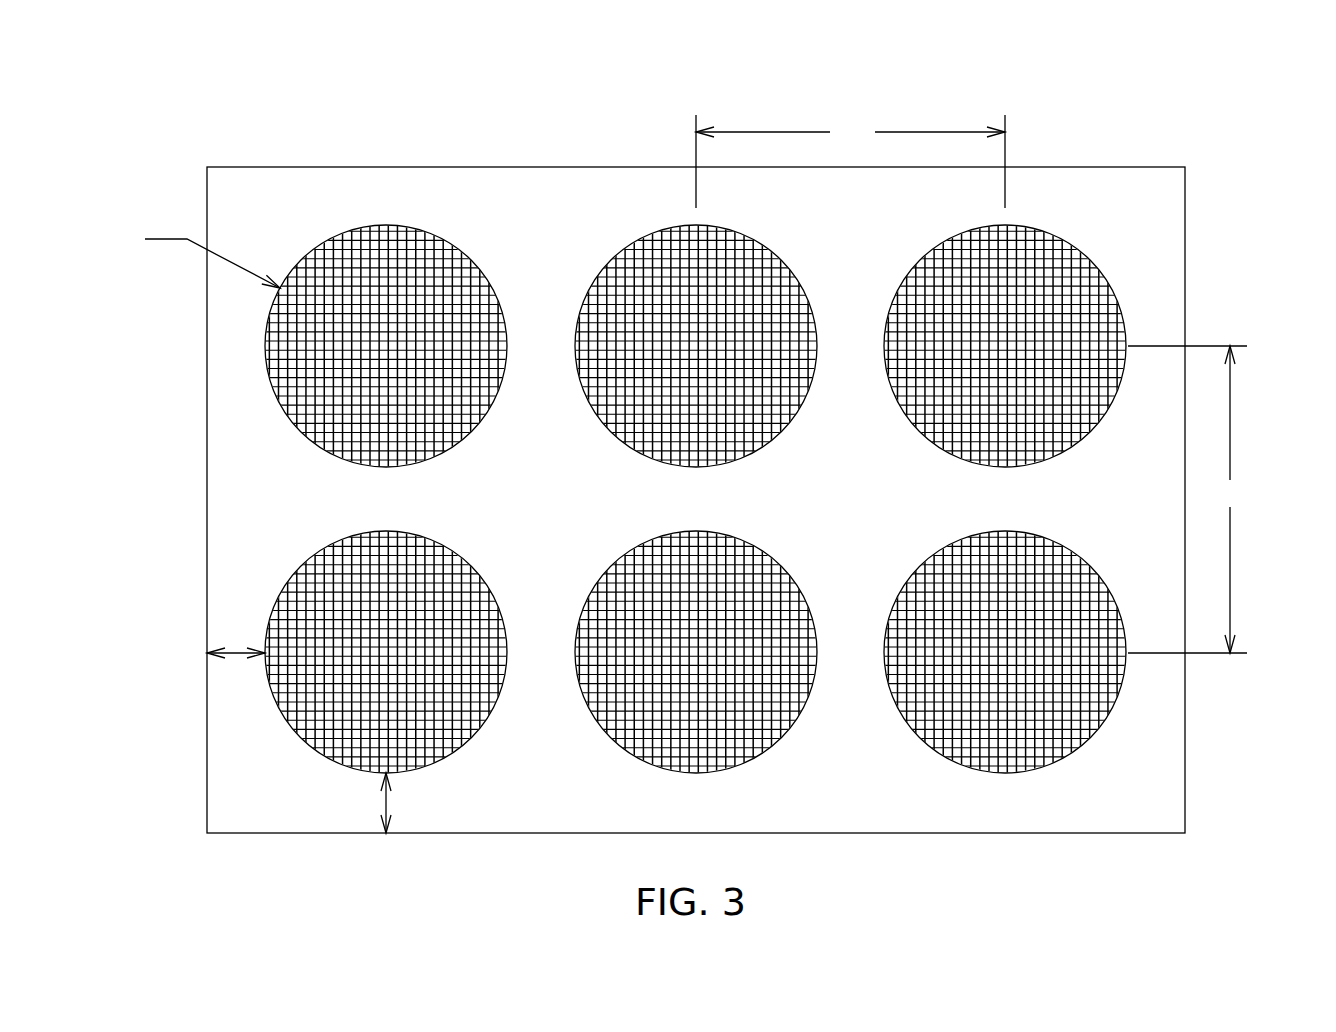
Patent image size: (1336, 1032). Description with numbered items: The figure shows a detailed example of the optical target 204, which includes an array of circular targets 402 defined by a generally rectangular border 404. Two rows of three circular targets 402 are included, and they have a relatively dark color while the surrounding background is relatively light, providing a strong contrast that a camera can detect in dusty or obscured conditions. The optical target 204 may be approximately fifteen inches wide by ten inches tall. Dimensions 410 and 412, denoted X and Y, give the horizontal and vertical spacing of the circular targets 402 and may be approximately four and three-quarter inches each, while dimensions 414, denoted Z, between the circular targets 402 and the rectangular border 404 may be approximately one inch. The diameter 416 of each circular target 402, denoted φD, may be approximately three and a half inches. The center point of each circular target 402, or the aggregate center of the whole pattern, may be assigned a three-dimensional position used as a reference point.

The optical target 204 is at (745, 432).
The circular targets 402 is at (457, 245).
The rectangular border 404 is at (362, 167).
The dimension X 410 is at (915, 130).
The dimension Y 412 is at (1232, 585).
The dimensions Z 414 is at (237, 660).
The diameter 416 is at (180, 239).